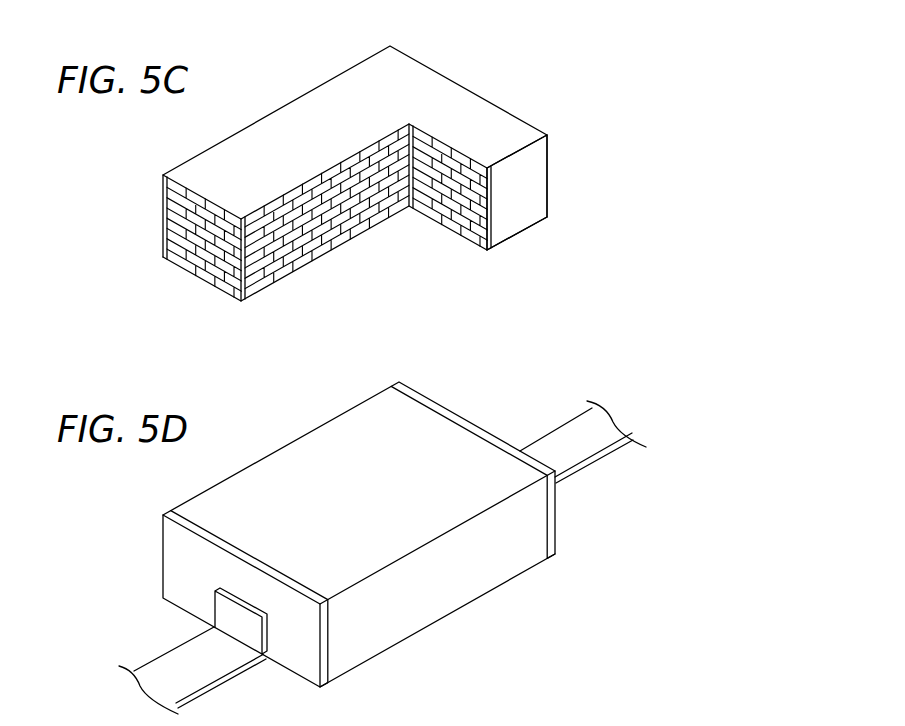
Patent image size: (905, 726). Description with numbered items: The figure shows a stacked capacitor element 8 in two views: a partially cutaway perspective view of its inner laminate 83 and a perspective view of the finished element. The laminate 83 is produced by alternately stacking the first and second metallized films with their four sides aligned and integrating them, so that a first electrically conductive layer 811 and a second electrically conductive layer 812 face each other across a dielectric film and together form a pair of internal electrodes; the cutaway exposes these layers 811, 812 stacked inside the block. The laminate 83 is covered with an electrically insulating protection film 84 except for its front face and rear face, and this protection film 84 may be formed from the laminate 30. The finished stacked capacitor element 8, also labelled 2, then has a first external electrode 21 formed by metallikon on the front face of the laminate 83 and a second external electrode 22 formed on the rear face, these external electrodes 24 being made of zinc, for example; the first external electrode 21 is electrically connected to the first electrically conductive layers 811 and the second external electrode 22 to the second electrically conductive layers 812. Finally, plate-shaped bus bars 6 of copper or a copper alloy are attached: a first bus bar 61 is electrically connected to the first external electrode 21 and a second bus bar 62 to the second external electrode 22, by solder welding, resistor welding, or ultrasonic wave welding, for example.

In FIG. 5C, the protection film 84 is at (367, 173).
In FIG. 5C, the laminate 30 is at (443, 88).
In FIG. 5D, the laminate 30 is at (308, 445).
In FIG. 5C, the laminate 83 is at (550, 175).
In FIG. 5C, the first electrically conductive layer 811 is at (183, 268).
In FIG. 5C, the second electrically conductive layer 812 is at (452, 217).
In FIG. 5D, the battery cell 2 is at (362, 534).
In FIG. 5D, the stacked capacitor element 8 is at (362, 534).
In FIG. 5D, the end plate 24 is at (414, 549).
In FIG. 5D, the first external electrode 21 is at (327, 655).
In FIG. 5D, the second external electrode 22 is at (553, 522).
In FIG. 5D, the electrode tab 6 is at (380, 551).
In FIG. 5D, the first bus bar 61 is at (168, 670).
In FIG. 5D, the second bus bar 62 is at (552, 443).